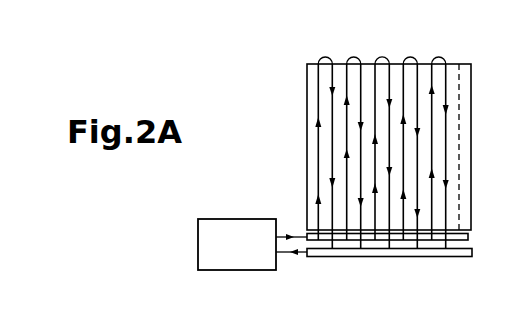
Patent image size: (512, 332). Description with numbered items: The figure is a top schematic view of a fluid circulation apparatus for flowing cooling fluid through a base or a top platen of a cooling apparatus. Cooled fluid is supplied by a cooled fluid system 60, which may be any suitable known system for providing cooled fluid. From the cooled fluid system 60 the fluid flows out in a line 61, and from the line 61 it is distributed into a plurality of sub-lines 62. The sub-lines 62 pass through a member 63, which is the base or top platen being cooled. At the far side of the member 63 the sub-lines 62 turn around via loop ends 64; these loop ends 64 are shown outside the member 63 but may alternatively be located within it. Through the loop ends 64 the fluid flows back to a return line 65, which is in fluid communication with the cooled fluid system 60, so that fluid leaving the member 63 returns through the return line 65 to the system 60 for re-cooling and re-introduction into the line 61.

The cooled fluid system 60 is at (228, 251).
The line 61 is at (303, 236).
The sub-lines 62 is at (317, 146).
The member 63 is at (306, 112).
The loop ends 64 is at (320, 57).
The return line 65 is at (302, 253).